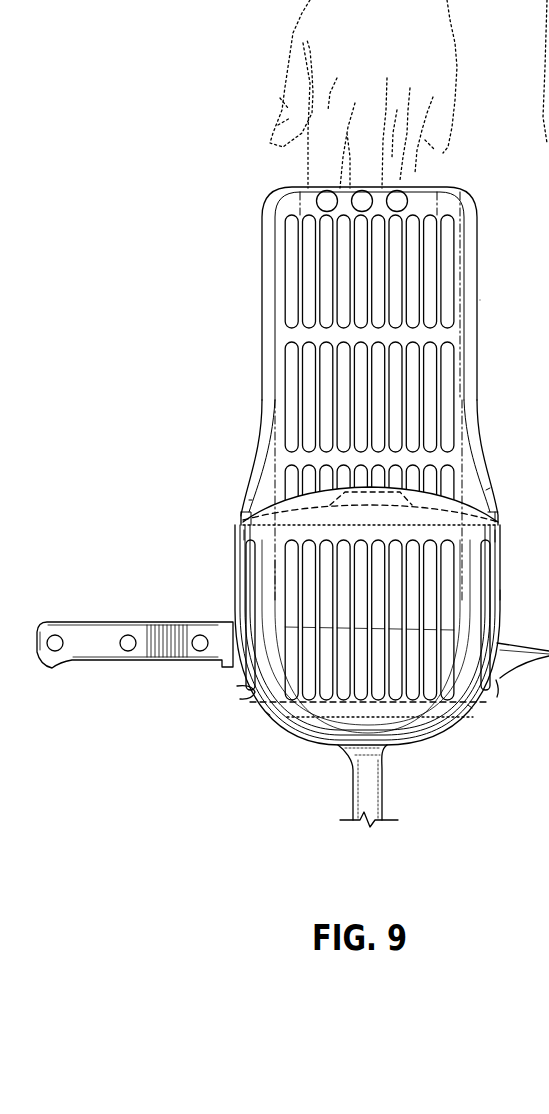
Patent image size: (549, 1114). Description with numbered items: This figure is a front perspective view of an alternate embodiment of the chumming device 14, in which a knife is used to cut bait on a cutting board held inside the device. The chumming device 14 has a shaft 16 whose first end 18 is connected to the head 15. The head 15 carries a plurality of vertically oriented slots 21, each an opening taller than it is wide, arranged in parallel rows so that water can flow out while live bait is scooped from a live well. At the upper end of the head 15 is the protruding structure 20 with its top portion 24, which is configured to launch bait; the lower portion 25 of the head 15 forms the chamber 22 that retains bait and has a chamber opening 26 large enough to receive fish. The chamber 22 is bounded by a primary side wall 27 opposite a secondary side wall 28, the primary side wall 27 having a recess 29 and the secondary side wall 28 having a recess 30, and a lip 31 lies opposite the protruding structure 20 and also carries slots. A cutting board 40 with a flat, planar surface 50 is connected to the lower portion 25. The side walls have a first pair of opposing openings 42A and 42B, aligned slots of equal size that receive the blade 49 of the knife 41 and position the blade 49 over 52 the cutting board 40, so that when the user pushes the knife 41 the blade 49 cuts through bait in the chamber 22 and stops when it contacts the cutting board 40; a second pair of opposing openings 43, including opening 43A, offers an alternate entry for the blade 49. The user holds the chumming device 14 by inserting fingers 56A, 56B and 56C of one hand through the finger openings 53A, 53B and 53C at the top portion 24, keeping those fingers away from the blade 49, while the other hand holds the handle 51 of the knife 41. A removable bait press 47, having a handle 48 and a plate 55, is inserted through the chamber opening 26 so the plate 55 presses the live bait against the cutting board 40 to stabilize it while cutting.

The chumming device 14 is at (245, 325).
The head 15 is at (465, 350).
The shaft 16 is at (352, 810).
The first end 18 is at (372, 780).
The protruding structure 20 is at (470, 280).
The vertically oriented slots 21 is at (290, 255).
The chamber 22 is at (280, 575).
The top portion 24 is at (280, 360).
The lower portion 25 is at (268, 713).
The chamber opening 26 is at (497, 517).
The primary side wall 27 is at (245, 536).
The secondary side wall 28 is at (497, 537).
The recess 29 is at (250, 500).
The recess 30 is at (488, 487).
The lip 31 is at (430, 492).
The cutting board 40 is at (285, 712).
The knife 41 is at (140, 664).
The first opposing opening 42A is at (237, 690).
The first opposing opening 42B is at (497, 686).
The second pair of opposing openings 43 is at (524, 593).
The second opposing opening 43A is at (375, 605).
The removable bait press 47 is at (240, 514).
The handle 48 is at (318, 472).
The blade 49 is at (508, 650).
The flat, planar surface 50 is at (470, 707).
The handle 51 is at (92, 652).
The over 52 is at (440, 723).
The finger opening 53A is at (318, 197).
The finger opening 53B is at (360, 212).
The finger opening 53C is at (395, 208).
The plate 55 is at (320, 507).
The finger 56A is at (320, 170).
The finger 56B is at (365, 180).
The finger 56C is at (405, 183).